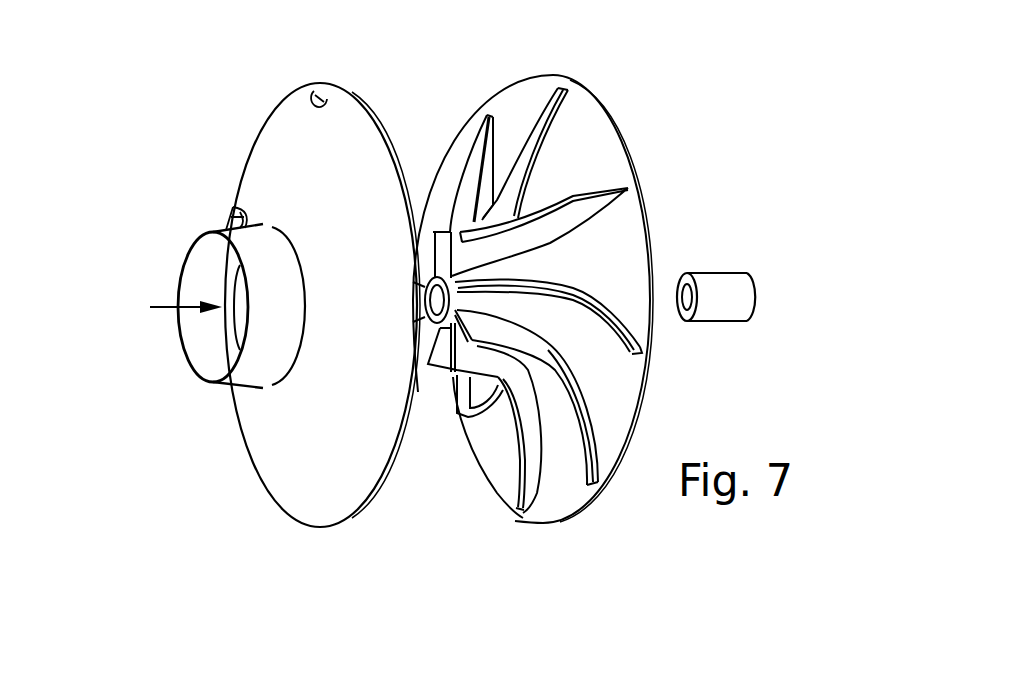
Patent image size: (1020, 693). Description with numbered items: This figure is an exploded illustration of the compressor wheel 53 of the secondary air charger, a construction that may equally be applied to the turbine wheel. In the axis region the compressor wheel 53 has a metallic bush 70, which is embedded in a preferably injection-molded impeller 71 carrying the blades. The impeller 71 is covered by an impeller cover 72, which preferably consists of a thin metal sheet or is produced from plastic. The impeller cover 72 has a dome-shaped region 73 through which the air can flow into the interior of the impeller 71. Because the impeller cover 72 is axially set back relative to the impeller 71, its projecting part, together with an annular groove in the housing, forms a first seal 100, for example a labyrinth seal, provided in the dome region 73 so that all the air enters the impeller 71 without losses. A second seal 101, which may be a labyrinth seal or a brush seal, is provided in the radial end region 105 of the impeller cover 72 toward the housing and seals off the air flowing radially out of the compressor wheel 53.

The compressor wheel 53 is at (674, 111).
The metallic bush 70 is at (722, 285).
The impeller 71 is at (552, 500).
The impeller cover 72 is at (333, 475).
The dome-shaped region 73 is at (267, 307).
The first seal 100 is at (230, 203).
The second seal 101 is at (310, 88).
The radial end region 105 is at (367, 172).